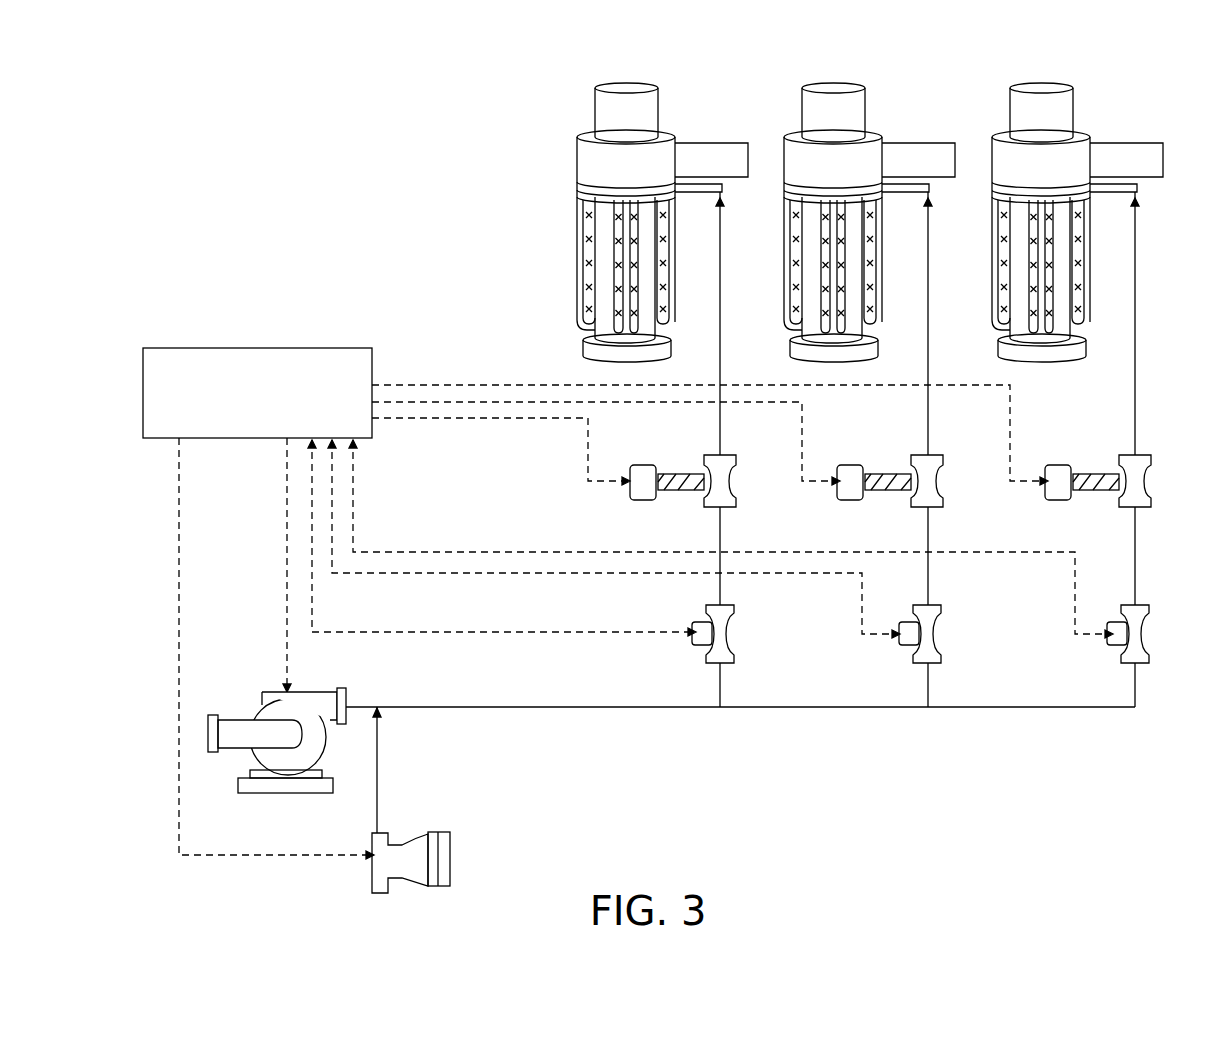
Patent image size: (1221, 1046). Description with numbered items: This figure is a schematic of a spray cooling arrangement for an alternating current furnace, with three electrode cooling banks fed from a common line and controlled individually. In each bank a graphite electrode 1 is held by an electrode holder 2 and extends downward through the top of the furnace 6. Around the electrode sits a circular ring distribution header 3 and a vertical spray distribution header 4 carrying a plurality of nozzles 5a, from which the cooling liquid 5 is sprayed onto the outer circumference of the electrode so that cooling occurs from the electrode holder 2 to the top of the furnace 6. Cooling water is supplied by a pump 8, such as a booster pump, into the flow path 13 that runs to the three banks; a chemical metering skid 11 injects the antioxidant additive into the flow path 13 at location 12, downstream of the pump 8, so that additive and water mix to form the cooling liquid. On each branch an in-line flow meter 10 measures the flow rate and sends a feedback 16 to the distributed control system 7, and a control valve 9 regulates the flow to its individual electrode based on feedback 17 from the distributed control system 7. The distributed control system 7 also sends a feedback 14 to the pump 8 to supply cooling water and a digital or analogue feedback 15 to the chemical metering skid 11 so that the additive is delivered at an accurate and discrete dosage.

The graphite electrode 1 is at (595, 96).
The electrode holder 2 is at (577, 155).
The circular ring distribution header 3 is at (577, 190).
The vertical spray distribution header 4 is at (577, 260).
The nozzles 5a is at (586, 318).
The cooling liquid 5 is at (583, 336).
The top of the furnace 6 is at (583, 345).
The distributed control system (DCS) 7 is at (341, 348).
The pump 8 is at (268, 700).
The control valve 9 is at (1150, 480).
The in-line flow meter 10 is at (1150, 626).
The chemical metering skid 11 is at (440, 830).
The location 12 is at (385, 757).
The flow path 13 is at (392, 705).
The feedback to the pump 14 is at (287, 537).
The feedback to the chemical metering skid 15 is at (179, 592).
The feedback from the flow meter 16 is at (396, 552).
The feedback to the control valve 17 is at (523, 420).